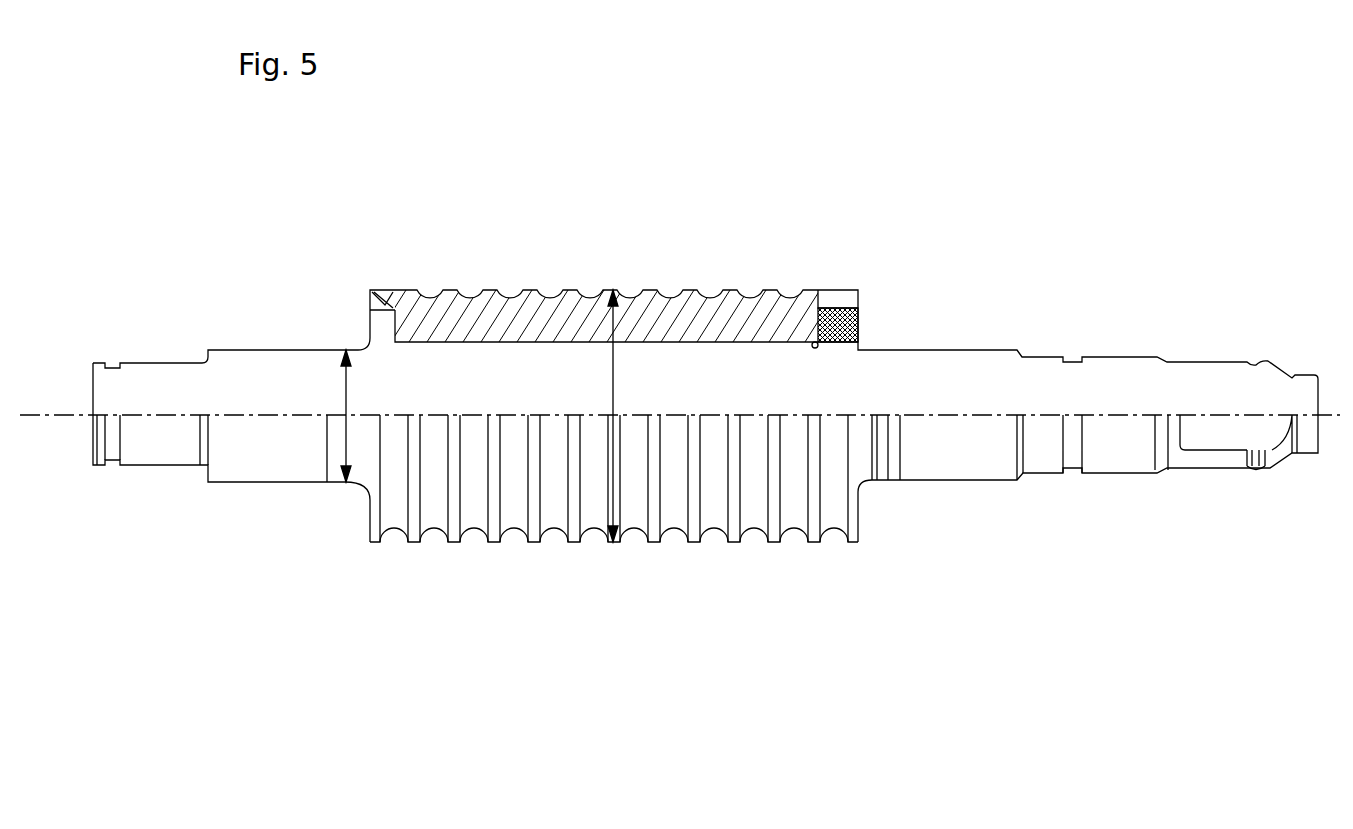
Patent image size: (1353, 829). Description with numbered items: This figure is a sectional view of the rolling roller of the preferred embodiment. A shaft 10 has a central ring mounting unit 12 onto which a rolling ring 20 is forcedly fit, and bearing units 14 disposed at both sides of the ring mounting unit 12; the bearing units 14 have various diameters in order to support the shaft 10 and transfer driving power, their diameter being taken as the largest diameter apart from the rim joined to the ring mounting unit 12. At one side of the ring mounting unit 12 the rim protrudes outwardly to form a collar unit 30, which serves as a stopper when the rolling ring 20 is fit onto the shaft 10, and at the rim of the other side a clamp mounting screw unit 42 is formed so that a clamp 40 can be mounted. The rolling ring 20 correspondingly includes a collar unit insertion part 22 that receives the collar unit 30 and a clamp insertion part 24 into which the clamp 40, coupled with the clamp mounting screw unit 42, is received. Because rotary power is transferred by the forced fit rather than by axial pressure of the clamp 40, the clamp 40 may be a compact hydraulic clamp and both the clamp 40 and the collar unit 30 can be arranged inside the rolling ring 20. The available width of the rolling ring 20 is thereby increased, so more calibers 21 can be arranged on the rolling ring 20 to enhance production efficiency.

The shaft 10 is at (986, 165).
The ring mounting unit 12 is at (506, 370).
The bearing unit 14 is at (270, 372).
The rolling ring 20 is at (712, 322).
The caliber 21 is at (393, 532).
The collar unit insertion part 22 is at (388, 302).
The clamp insertion part 24 is at (838, 303).
The collar unit 30 is at (375, 300).
The clamp 40 is at (852, 320).
The clamp mounting screw unit 42 is at (835, 348).